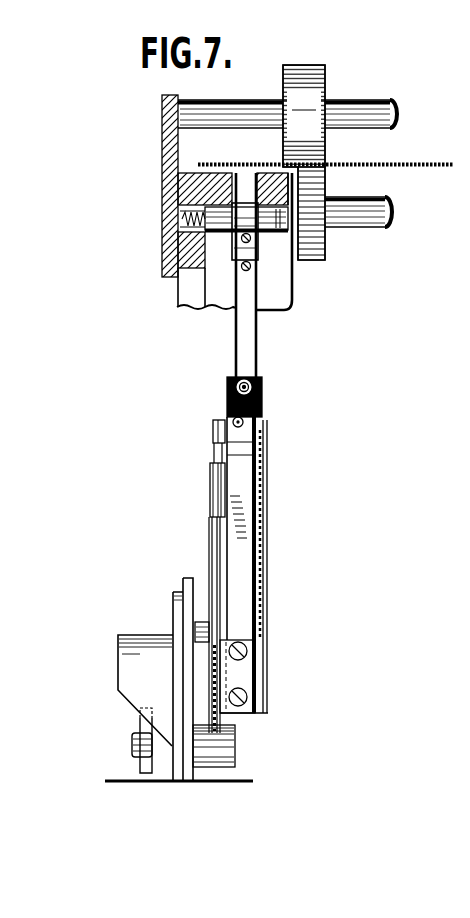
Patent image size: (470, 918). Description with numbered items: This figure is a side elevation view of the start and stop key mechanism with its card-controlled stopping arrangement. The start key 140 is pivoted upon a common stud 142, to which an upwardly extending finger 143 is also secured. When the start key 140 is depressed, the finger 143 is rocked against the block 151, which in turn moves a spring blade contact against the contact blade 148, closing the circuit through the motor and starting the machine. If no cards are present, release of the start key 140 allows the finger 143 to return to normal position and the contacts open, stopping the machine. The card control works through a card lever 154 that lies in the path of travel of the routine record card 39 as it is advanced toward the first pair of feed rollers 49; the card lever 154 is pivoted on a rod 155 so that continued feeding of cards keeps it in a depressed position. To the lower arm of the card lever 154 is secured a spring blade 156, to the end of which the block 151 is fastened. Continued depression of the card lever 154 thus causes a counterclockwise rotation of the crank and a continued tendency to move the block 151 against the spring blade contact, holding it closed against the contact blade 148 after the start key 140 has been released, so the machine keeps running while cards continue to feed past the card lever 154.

The first pair of feed rollers 49 is at (311, 66).
The routine record card 39 is at (401, 163).
The card lever 154 is at (245, 188).
The rod 155 is at (262, 246).
The spring blade 156 is at (248, 342).
The block 151 is at (262, 401).
The finger 143 is at (214, 452).
The contact blade 148 is at (242, 563).
The stud 142 is at (132, 743).
The start key 140 is at (140, 767).